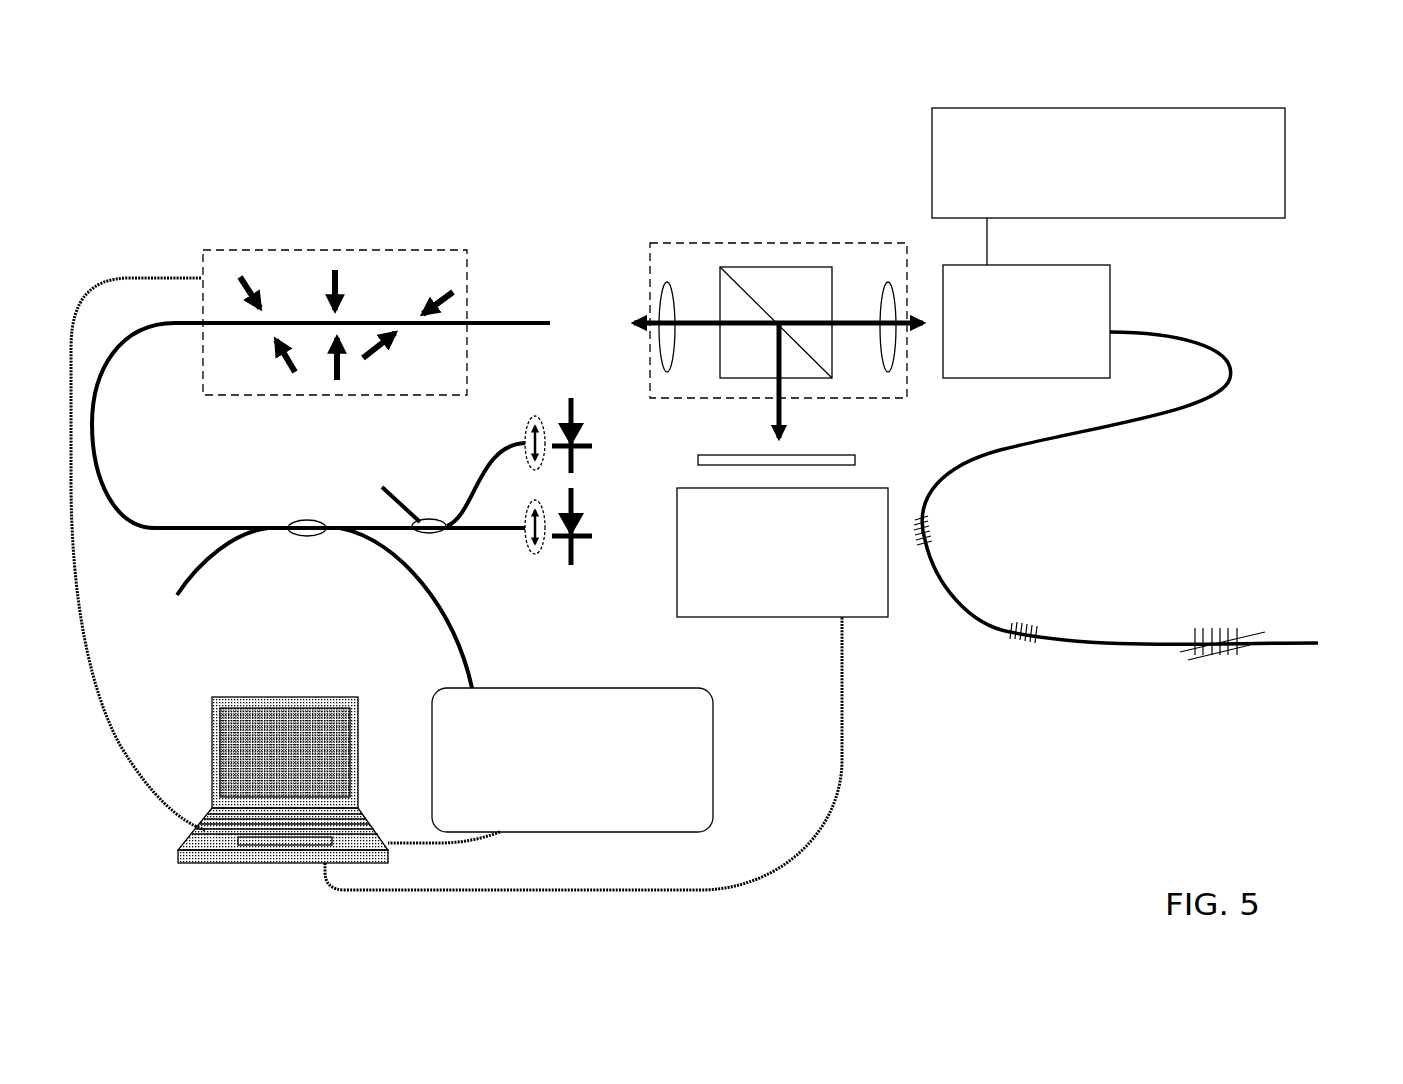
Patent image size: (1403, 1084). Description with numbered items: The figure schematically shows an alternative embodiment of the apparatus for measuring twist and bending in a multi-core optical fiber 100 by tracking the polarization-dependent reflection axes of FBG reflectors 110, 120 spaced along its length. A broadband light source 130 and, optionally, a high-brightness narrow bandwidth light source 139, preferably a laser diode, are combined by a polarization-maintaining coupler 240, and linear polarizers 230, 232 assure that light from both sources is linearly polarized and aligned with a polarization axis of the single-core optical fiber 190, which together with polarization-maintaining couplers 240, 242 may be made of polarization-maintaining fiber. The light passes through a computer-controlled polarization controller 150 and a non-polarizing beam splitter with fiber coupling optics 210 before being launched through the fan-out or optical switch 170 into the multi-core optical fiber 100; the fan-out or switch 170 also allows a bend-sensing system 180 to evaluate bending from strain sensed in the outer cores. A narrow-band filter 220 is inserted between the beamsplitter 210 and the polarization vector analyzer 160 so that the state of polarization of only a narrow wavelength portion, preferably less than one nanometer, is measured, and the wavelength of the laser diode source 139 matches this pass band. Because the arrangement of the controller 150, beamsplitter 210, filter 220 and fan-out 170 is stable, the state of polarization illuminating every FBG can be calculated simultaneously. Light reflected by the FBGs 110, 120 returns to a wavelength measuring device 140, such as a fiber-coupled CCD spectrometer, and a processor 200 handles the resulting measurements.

The multi-core optical fiber 100 is at (1210, 355).
The FBG reflector 110 is at (1030, 635).
The FBG reflector 120 is at (1205, 650).
The broadband light source 130 is at (582, 546).
The high-brightness narrow bandwidth light source 139 is at (572, 397).
The wavelength measuring device 140 is at (698, 808).
The polarization controller 150 is at (223, 267).
The polarization vector analyzer 160 is at (822, 600).
The fan-out or optical switch 170 is at (1097, 277).
The bend-sensing system 180 is at (1175, 112).
The single-core optical fiber 190 is at (123, 496).
The processor 200 is at (245, 865).
The non-polarizing beam splitter with fiber coupling optics 210 is at (733, 243).
The narrow-band filter 220 is at (855, 462).
The linear polarizer 230 is at (535, 418).
The linear polarizer 232 is at (540, 548).
The polarization-maintaining coupler 240 is at (427, 522).
The polarization-maintaining coupler 242 is at (310, 535).